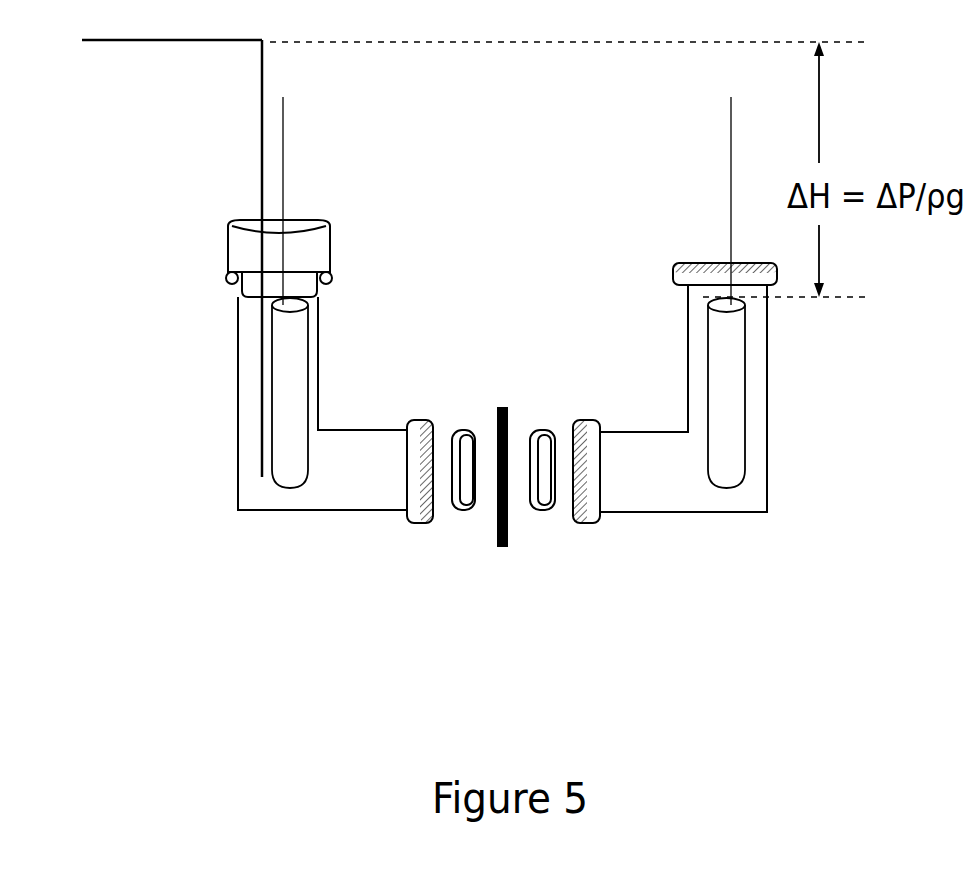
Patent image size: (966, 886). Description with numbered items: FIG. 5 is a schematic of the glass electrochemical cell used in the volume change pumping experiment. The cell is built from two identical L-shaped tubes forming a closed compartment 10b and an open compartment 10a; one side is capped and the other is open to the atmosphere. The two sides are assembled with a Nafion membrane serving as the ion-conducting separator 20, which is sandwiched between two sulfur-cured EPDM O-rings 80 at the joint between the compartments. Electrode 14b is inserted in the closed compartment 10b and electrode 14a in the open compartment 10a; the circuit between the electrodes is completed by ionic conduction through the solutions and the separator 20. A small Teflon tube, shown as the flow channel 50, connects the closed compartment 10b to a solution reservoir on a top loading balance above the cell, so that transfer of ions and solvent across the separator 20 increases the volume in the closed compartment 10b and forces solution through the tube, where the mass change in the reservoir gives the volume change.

The flow channel 50 is at (258, 120).
The closed compartment 10b is at (350, 494).
The open compartment 10a is at (654, 481).
The electrode 14b is at (290, 387).
The electrode 14a is at (725, 380).
The ion-conducting separator 20 is at (490, 395).
The O-rings 80 is at (535, 530).